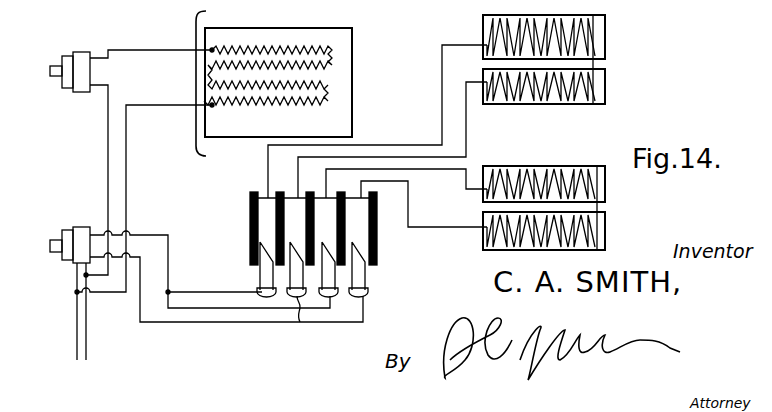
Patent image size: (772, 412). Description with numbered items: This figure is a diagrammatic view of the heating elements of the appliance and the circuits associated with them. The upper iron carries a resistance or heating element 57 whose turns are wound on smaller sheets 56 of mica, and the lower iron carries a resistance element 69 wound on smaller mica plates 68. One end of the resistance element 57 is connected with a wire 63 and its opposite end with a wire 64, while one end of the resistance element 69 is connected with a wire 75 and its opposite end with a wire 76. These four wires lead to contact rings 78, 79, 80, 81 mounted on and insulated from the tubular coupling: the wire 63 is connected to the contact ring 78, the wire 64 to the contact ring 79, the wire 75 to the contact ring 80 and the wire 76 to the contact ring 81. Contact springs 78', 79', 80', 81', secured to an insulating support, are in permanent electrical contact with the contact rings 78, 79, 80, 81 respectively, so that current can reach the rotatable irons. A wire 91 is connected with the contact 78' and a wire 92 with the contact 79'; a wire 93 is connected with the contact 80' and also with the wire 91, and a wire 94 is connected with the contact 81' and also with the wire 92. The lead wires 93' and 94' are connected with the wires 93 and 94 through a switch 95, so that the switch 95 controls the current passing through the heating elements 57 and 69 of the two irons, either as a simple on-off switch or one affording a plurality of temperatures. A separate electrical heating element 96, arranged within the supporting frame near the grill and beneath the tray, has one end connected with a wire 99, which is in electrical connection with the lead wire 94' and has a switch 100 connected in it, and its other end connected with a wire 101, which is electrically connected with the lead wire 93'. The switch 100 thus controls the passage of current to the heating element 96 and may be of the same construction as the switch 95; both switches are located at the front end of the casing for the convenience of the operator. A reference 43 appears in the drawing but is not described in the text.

The heating unit 43 is at (274, 83).
The electrical heating element 96 is at (298, 50).
The wire 99 is at (161, 50).
The switch 100 is at (80, 85).
The wire 101 is at (126, 160).
The wire 63 is at (451, 45).
The wire 64 is at (466, 118).
The wire 75 is at (466, 168).
The wire 76 is at (452, 227).
The mica sheets 56 is at (605, 44).
The resistance element 57 is at (597, 30).
The mica plates 68 is at (605, 191).
The resistance element 69 is at (598, 195).
The contact ring 78 is at (241, 228).
The contact ring 79 is at (258, 228).
The contact ring 80 is at (270, 228).
The contact ring 81 is at (290, 228).
The contact spring 78' is at (240, 269).
The contact spring 79' is at (267, 269).
The contact spring 80' is at (365, 269).
The contact spring 81' is at (378, 269).
The wire 91 is at (188, 292).
The wire 92 is at (305, 325).
The wire 93 is at (210, 269).
The wire 94 is at (226, 305).
The switch 95 is at (80, 232).
The lead wire 93' is at (60, 312).
The lead wire 94' is at (102, 311).